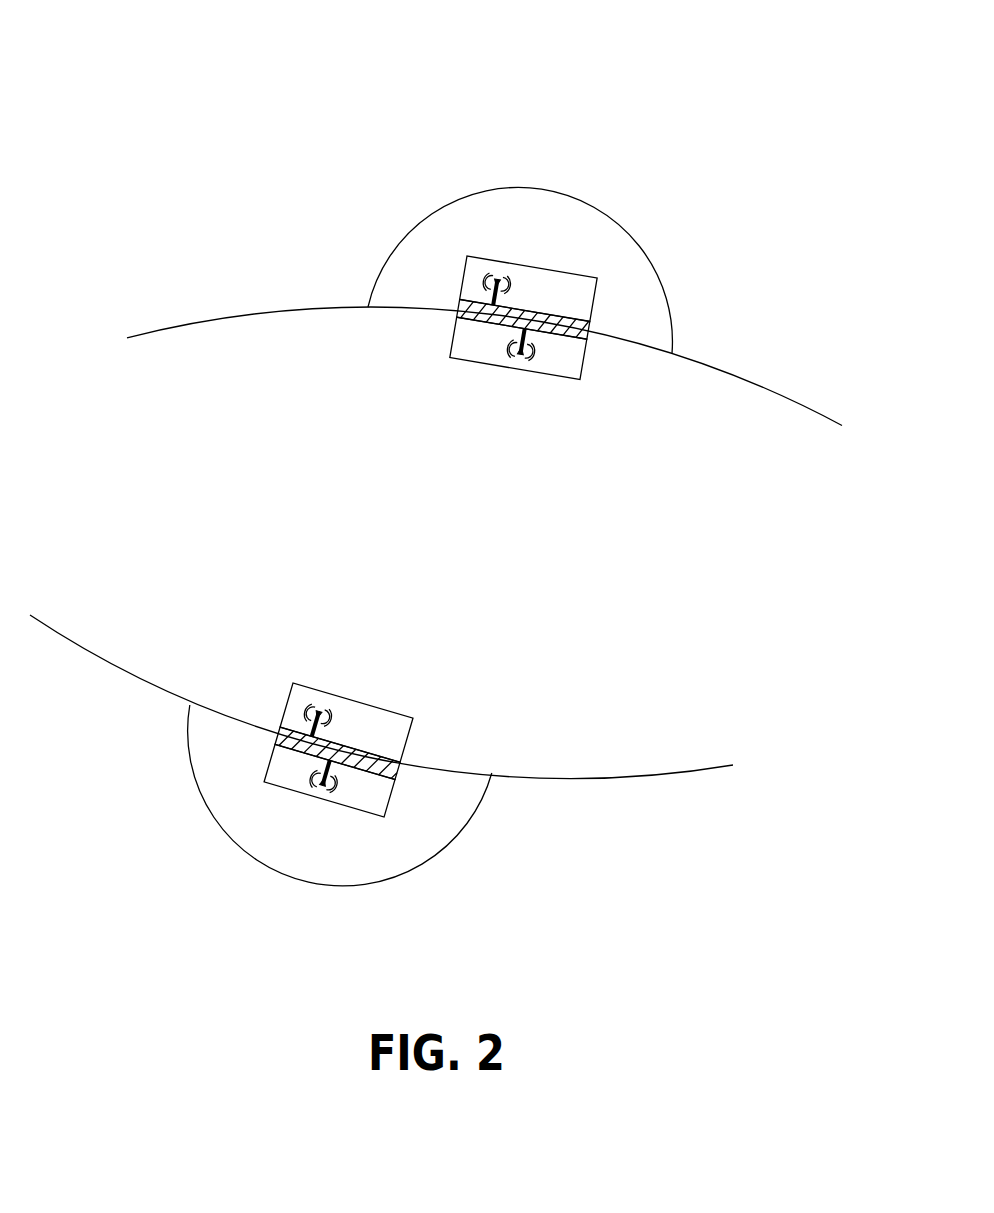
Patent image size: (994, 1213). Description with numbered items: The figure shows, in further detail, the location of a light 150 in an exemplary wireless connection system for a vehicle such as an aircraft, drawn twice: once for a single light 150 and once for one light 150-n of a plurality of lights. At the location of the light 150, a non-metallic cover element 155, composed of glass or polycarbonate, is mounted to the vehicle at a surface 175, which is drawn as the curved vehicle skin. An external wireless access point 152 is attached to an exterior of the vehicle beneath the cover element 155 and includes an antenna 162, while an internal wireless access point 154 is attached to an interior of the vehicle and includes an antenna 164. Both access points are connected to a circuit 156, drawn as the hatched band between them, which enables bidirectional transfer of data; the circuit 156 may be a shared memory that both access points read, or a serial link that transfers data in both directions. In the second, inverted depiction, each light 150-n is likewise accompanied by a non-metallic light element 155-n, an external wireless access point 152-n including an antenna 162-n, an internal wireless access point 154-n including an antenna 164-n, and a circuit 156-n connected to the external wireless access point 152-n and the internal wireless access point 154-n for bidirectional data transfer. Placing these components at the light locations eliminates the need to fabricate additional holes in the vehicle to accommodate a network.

The light 150 is at (516, 230).
The light (nth of plurality) 150-n is at (276, 771).
The external wireless access point 152 is at (557, 282).
The external wireless access point (nth) 152-n is at (294, 777).
The internal wireless access point 154 is at (475, 352).
The internal wireless access point (nth) 154-n is at (377, 720).
The non-metallic cover element 155 is at (540, 165).
The non-metallic light element (nth) 155-n is at (487, 803).
The circuit 156 is at (457, 318).
The circuit (nth) 156-n is at (264, 781).
The antenna 162 is at (490, 298).
The antenna (nth external) 162-n is at (331, 770).
The antenna 164 is at (534, 338).
The antenna (nth internal) 164-n is at (311, 717).
The surface 175 is at (765, 386).